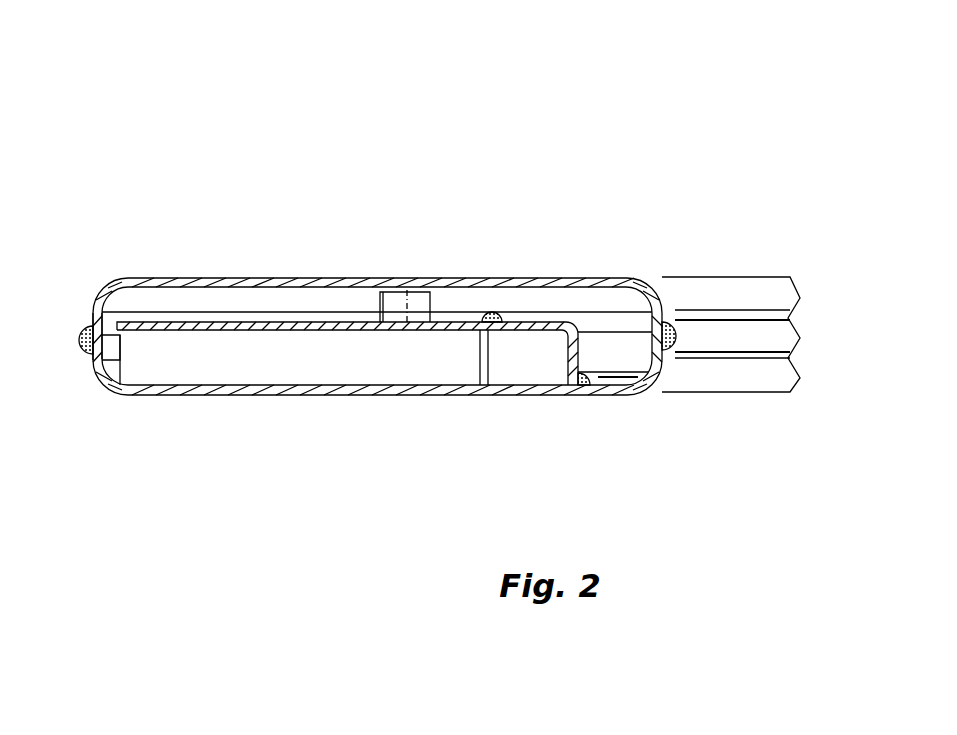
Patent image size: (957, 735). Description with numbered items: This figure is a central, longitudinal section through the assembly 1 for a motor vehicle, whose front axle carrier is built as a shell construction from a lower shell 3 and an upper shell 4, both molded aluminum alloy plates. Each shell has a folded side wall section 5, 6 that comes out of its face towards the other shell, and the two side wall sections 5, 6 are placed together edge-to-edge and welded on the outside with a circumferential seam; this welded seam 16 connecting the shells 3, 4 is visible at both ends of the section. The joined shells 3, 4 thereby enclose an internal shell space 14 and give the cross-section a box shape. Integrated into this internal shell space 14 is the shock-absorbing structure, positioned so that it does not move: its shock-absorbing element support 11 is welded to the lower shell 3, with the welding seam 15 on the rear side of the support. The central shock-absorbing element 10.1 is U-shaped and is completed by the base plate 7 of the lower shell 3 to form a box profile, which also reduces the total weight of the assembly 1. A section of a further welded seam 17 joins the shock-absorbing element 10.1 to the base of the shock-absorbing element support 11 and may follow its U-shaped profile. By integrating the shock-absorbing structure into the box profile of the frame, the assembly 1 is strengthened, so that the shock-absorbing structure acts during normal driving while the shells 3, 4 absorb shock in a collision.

The assembly 1 is at (303, 184).
The lower shell 3 is at (397, 396).
The upper shell 4 is at (329, 278).
The side wall section 5 is at (90, 365).
The side wall section 6 is at (88, 313).
The base plate 7 is at (287, 383).
The central shock-absorbing element 10.1 is at (278, 318).
The shock-absorbing element support 11 is at (545, 315).
The internal shell space 14 is at (470, 298).
The welding seam 15 is at (604, 378).
The welded seam 16 is at (700, 330).
The welded seam 17 is at (492, 312).